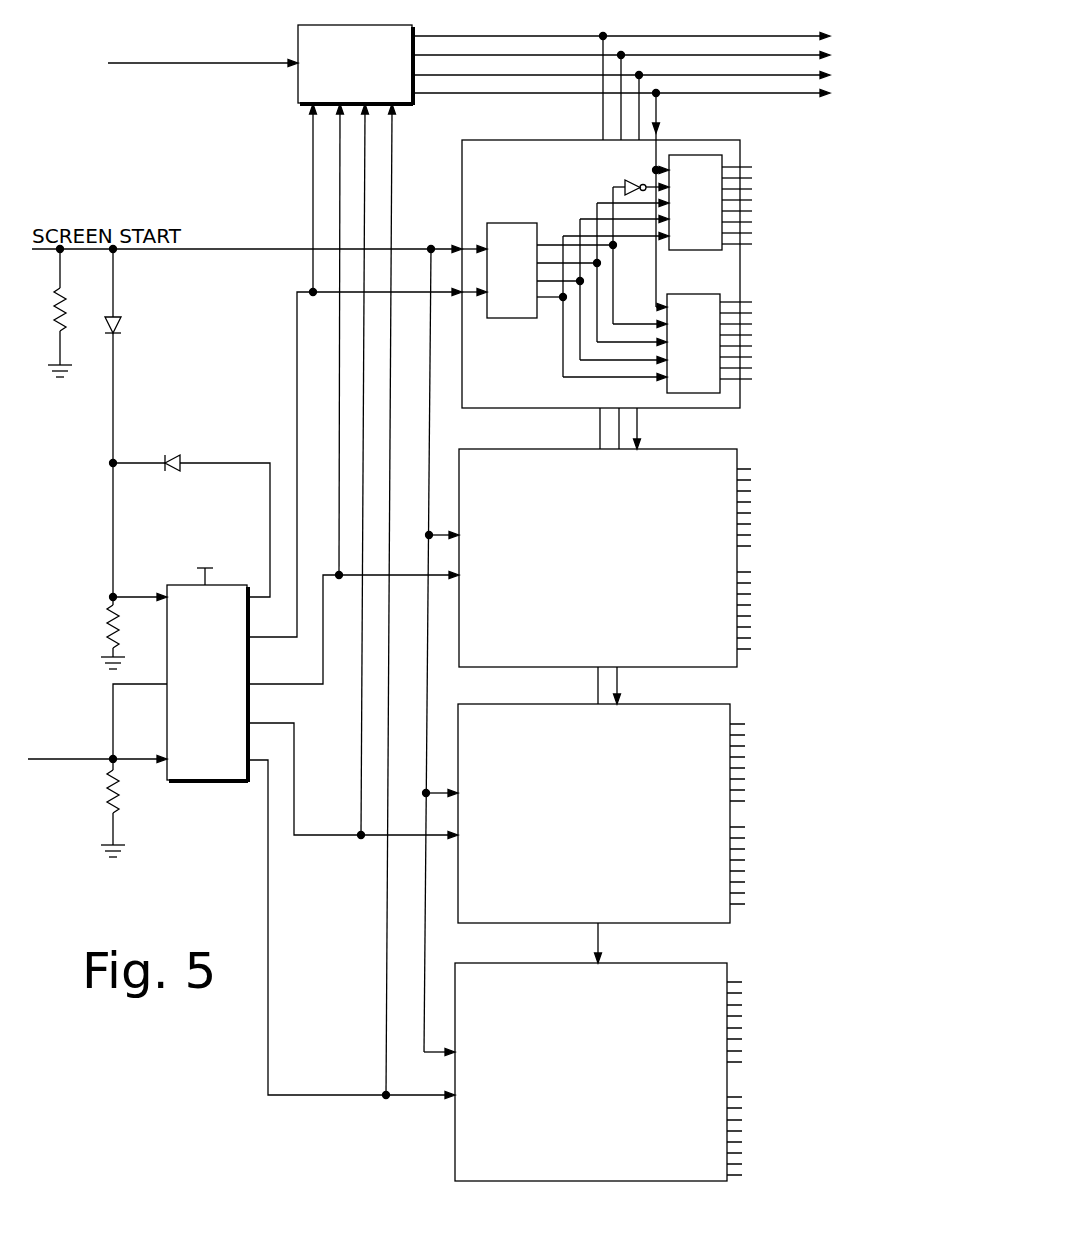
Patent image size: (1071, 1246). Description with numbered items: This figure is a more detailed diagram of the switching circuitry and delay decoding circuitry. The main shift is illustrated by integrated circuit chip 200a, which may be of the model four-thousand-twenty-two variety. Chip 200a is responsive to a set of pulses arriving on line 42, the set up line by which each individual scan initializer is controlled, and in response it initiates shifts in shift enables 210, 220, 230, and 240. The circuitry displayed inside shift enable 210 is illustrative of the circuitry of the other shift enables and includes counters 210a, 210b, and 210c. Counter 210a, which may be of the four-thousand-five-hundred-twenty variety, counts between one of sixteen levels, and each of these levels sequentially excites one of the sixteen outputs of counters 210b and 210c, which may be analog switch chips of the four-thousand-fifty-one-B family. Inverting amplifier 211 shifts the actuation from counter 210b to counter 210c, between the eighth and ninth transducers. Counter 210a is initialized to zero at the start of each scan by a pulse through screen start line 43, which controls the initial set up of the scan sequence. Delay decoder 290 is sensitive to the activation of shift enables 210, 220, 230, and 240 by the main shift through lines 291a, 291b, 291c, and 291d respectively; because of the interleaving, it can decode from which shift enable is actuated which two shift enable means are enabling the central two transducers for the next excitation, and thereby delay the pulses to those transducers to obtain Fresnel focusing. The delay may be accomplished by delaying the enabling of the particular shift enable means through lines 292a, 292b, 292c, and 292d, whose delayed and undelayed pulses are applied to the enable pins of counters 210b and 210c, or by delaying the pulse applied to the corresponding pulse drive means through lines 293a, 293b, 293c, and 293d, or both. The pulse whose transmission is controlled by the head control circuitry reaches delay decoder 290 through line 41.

The line 41 is at (249, 63).
The line 42 is at (60, 760).
The screen start line 43 is at (85, 251).
The integrated circuit chip 200a is at (217, 781).
The shift enable 210 is at (478, 140).
The counter 210a is at (510, 223).
The counter 210b is at (693, 250).
The counter 210c is at (667, 385).
The inverting amplifier 211 is at (625, 183).
The shift enable 220 is at (505, 449).
The shift enable 230 is at (505, 704).
The shift enable 240 is at (510, 963).
The delay decoder 290 is at (373, 25).
The line 291a is at (313, 156).
The line 291b is at (340, 188).
The line 291c is at (368, 187).
The line 291d is at (392, 152).
The line 292a is at (657, 116).
The line 292b is at (639, 117).
The line 292c is at (621, 108).
The line 292d is at (601, 36).
The line 293a is at (764, 94).
The line 293b is at (800, 76).
The line 293c is at (719, 54).
The line 293d is at (795, 35).